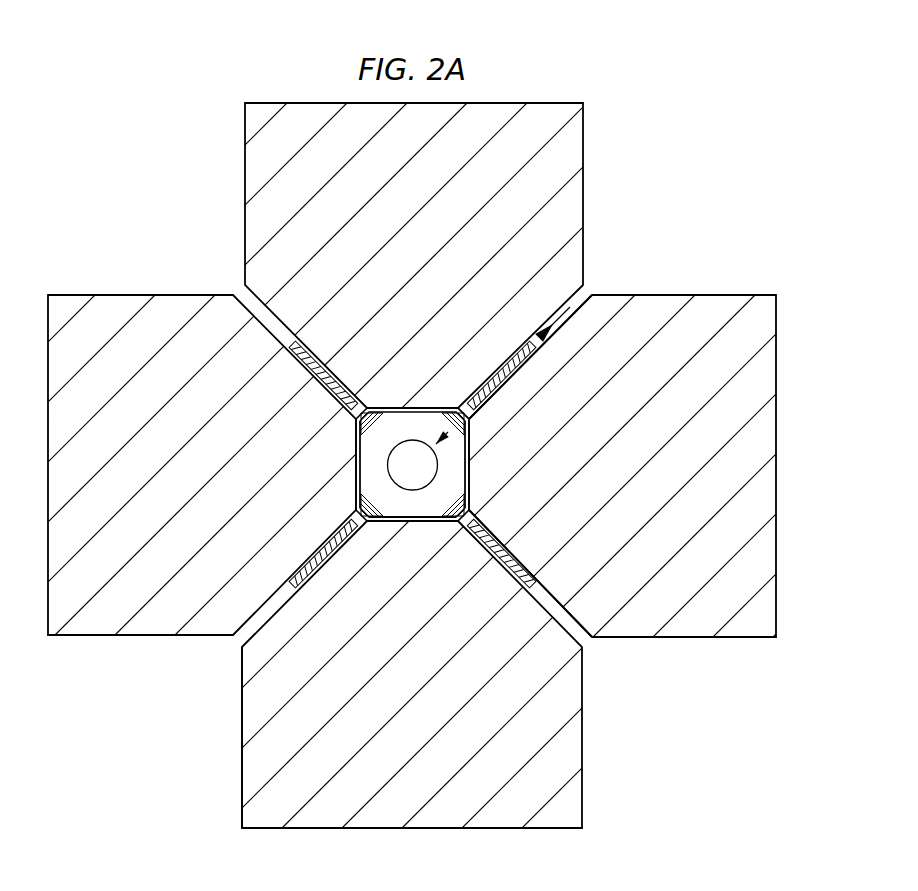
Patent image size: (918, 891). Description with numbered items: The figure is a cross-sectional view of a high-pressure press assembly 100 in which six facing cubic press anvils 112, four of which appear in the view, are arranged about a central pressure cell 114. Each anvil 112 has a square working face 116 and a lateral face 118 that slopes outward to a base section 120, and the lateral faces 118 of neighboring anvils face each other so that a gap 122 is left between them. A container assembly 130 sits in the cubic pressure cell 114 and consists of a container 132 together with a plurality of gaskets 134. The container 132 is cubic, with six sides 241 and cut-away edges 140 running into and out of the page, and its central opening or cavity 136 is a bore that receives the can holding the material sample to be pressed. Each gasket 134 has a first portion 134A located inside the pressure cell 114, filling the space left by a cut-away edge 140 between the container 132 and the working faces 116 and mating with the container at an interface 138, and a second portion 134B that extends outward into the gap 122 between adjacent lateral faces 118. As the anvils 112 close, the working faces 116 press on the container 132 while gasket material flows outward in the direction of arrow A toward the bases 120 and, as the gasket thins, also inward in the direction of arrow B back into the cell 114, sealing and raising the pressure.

The high-pressure press assembly 100 is at (150, 84).
The cubic press anvil 112 is at (560, 85).
The central pressure cell 114 is at (494, 477).
The working face 116 is at (470, 434).
The lateral face 118 is at (576, 318).
The base section 120 is at (152, 637).
The gap 122 is at (608, 666).
The container assembly 130 is at (380, 393).
The container 132 is at (410, 425).
The gasket 134 is at (312, 393).
The first portion of the gasket 134A is at (352, 428).
The second portion of the gasket 134B is at (302, 372).
The central opening or cavity 136 is at (397, 477).
The interface 138 is at (375, 450).
The cut-away edge 140 is at (412, 522).
The side 241 is at (472, 454).
The arrow A is at (519, 370).
The arrow B is at (472, 413).